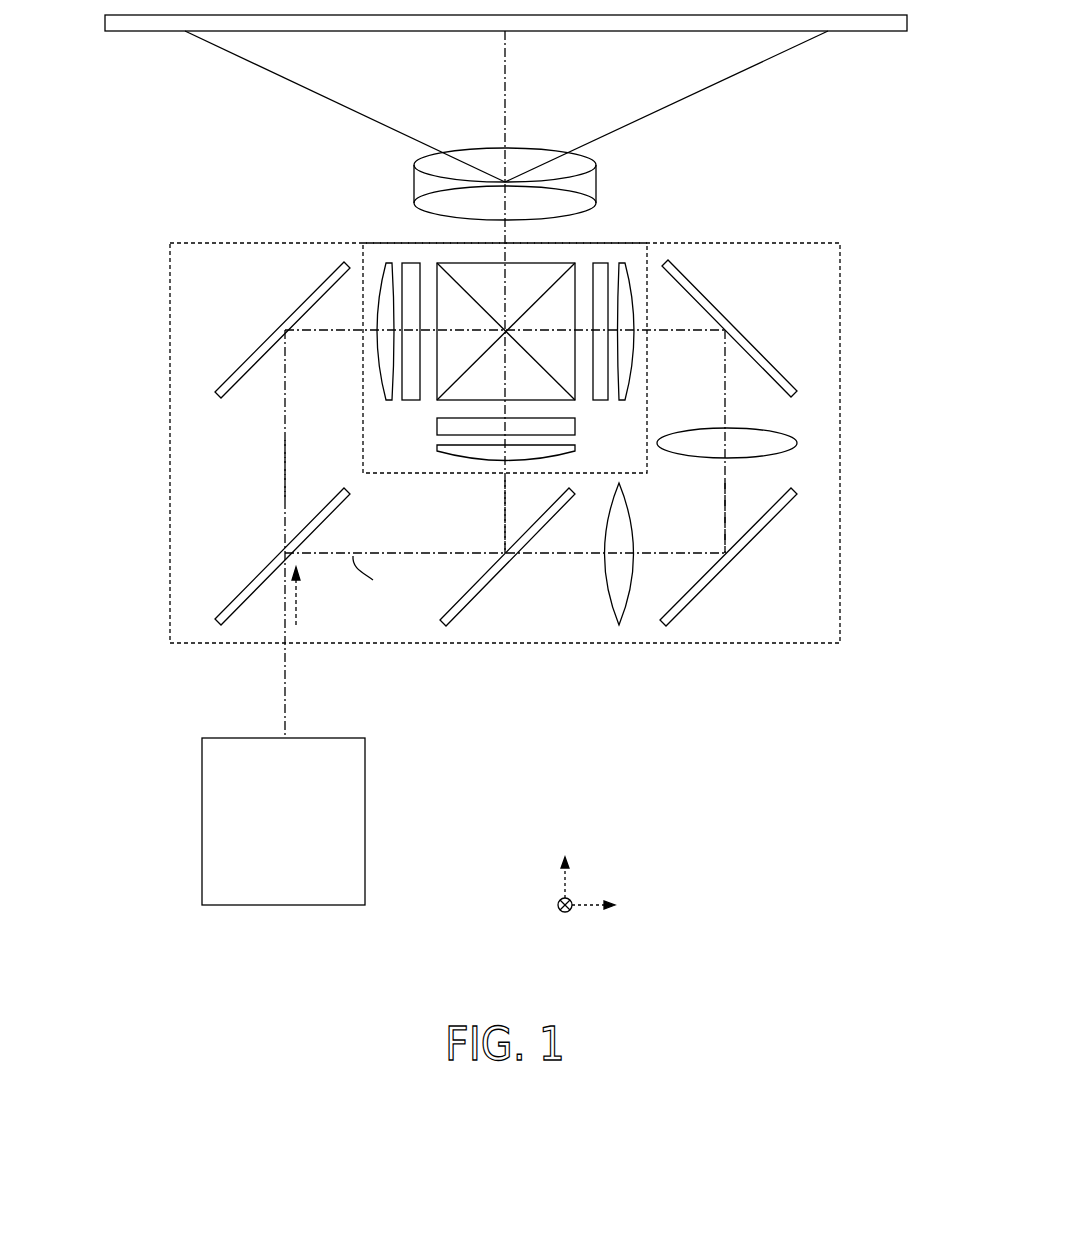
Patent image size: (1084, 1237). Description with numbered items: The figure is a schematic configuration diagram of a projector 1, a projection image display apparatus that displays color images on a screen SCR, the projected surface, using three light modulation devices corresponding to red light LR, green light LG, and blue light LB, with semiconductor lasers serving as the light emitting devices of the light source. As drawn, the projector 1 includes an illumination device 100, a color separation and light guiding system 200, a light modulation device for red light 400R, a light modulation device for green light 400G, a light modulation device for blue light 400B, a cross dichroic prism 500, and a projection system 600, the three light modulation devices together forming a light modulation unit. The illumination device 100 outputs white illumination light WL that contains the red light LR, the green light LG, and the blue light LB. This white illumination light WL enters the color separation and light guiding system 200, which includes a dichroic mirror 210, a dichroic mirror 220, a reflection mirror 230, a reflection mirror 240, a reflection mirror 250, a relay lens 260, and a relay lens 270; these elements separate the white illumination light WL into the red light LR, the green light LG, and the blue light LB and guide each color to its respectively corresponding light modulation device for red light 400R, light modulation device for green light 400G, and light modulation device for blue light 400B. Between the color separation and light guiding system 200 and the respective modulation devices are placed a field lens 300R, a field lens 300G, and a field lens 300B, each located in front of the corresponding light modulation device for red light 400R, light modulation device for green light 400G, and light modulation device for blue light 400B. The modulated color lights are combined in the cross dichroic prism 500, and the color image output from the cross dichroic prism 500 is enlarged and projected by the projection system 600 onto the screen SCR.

The projector 1 is at (848, 218).
The screen SCR is at (872, 31).
The projection system 600 is at (487, 155).
The cross dichroic prism 500 is at (518, 273).
The light modulation device for red light 400R is at (410, 262).
The light modulation device for green light 400G is at (437, 427).
The light modulation device for blue light 400B is at (601, 262).
The field lens 300R is at (385, 262).
The field lens 300G is at (438, 452).
The field lens 300B is at (623, 263).
The color separation and light guiding system 200 is at (170, 386).
The dichroic mirror 210 is at (258, 586).
The dichroic mirror 220 is at (481, 589).
The reflection mirror 230 is at (260, 346).
The reflection mirror 240 is at (753, 541).
The reflection mirror 250 is at (755, 349).
The relay lens 260 is at (604, 578).
The relay lens 270 is at (783, 432).
The illumination device 100 is at (365, 762).
The white illumination light WL is at (300, 607).
The red light LR is at (283, 466).
The green light LG is at (505, 512).
The blue light LB is at (725, 500).